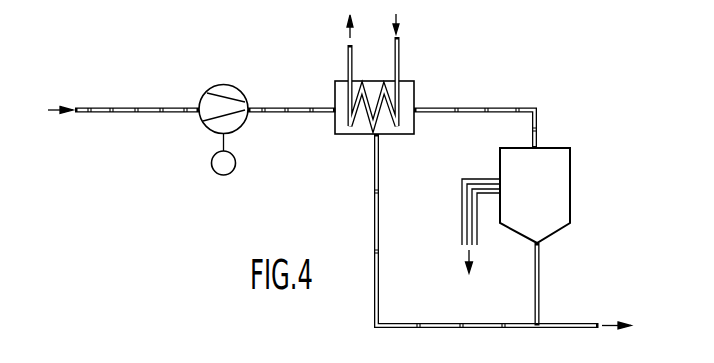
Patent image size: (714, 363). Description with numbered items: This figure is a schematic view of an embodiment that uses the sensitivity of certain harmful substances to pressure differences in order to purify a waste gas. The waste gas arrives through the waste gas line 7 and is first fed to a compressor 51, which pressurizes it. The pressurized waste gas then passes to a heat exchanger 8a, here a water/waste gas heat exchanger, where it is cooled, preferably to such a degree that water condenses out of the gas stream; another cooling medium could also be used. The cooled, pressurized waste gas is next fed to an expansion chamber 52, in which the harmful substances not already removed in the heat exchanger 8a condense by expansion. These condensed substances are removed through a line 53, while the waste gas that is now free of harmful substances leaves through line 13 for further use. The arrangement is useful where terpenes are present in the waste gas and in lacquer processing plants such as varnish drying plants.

The waste gas line 7 is at (122, 107).
The compressor 51 is at (205, 121).
The heat exchanger 8a is at (350, 141).
The expansion chamber 52 is at (557, 174).
The line 13 is at (462, 222).
The line 53 is at (572, 321).